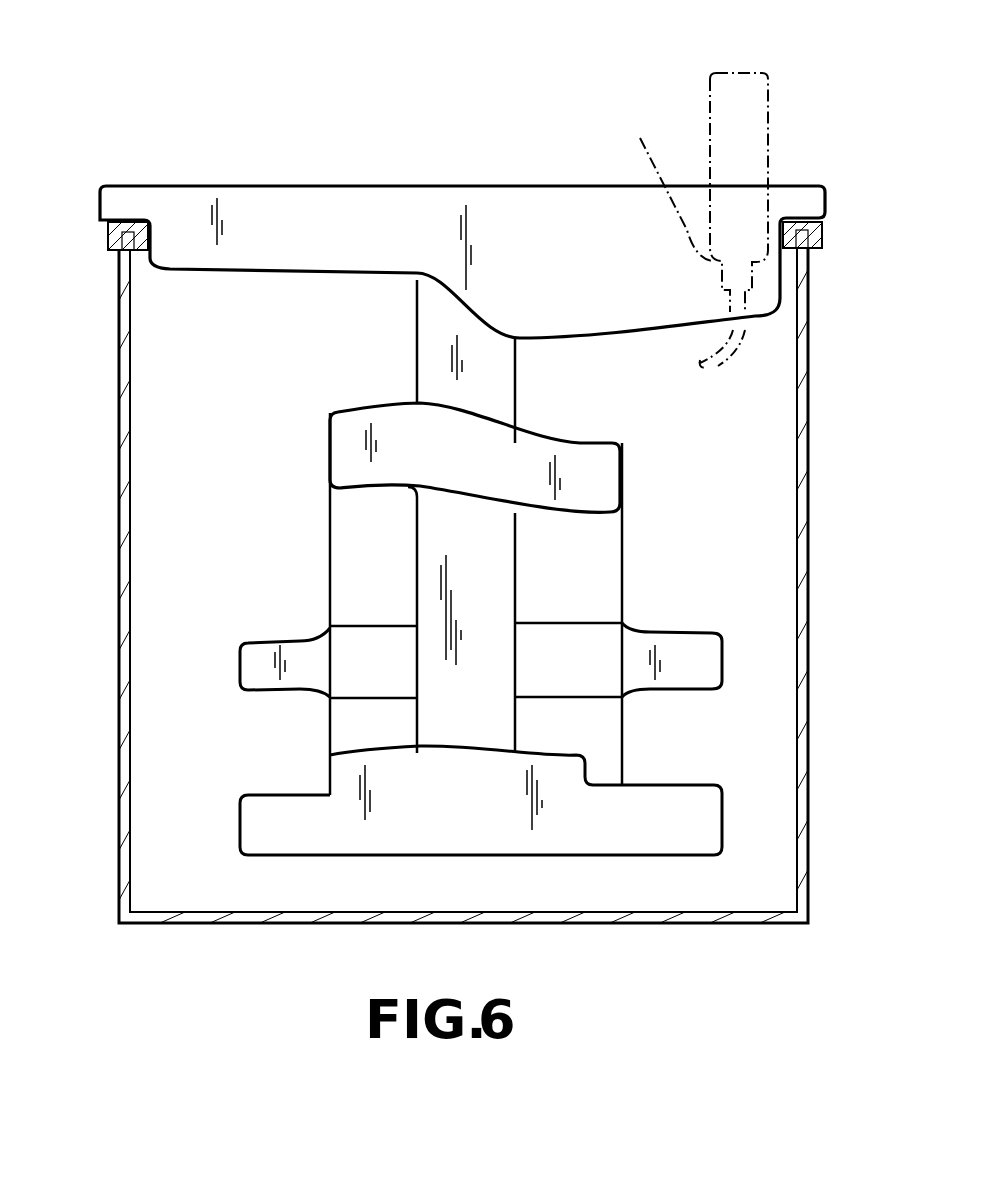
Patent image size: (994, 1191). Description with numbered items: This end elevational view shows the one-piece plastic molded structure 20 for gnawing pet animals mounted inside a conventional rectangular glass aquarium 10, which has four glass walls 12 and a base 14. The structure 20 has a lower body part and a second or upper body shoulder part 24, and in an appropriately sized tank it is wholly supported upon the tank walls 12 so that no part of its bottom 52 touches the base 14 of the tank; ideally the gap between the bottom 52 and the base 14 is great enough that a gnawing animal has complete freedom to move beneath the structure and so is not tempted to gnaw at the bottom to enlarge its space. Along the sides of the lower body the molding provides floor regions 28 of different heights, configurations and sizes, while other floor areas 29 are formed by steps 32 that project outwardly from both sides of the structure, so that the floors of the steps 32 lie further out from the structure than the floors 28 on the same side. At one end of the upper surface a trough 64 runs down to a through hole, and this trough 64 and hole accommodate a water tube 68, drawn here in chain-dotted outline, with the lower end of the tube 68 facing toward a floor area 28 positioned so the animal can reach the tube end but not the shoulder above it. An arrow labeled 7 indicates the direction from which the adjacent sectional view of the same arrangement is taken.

The aquarium 10 is at (461, 585).
The glass walls 12 is at (118, 558).
The base 14 is at (572, 912).
The plastic molded structure 20 is at (462, 177).
The upper body shoulder part 24 is at (355, 180).
The floor regions 28 is at (350, 411).
The floor areas 29 is at (470, 713).
The steps 32 is at (240, 665).
The bottom 52 is at (313, 857).
The trough 64 is at (661, 184).
The water tube 68 is at (715, 74).
The section view arrow 7 is at (868, 570).